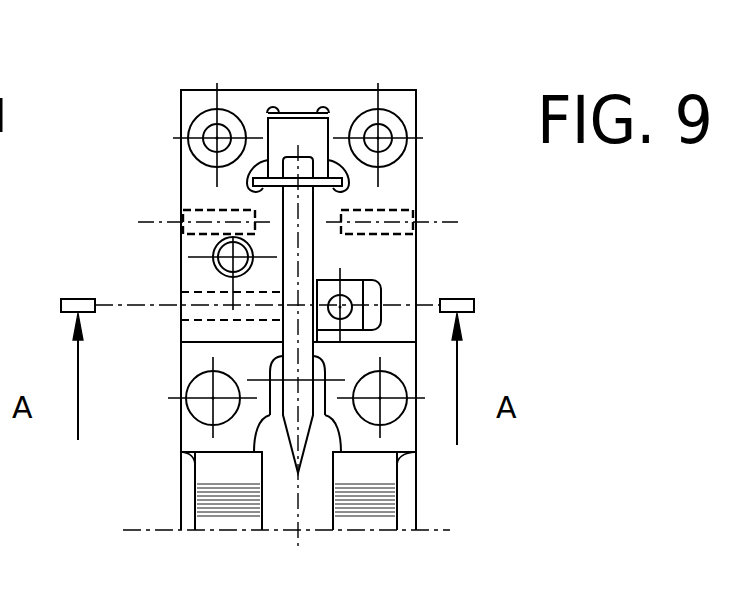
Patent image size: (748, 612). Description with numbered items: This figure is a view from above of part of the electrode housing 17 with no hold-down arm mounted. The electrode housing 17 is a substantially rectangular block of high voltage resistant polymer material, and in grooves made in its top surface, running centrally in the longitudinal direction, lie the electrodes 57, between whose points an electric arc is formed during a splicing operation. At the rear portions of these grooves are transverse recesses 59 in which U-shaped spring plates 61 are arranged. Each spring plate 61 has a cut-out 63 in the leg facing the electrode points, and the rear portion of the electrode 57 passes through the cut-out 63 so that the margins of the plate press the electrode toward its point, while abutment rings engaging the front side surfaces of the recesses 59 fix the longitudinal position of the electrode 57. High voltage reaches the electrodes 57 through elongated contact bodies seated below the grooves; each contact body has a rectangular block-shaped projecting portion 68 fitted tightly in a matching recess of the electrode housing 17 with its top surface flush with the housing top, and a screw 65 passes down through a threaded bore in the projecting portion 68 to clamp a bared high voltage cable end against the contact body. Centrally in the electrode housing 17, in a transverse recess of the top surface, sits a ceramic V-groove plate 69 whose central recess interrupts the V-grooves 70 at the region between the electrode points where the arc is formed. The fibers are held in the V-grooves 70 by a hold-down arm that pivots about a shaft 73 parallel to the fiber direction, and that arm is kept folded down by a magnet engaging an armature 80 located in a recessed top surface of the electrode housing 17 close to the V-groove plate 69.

The electrode housing 17 is at (257, 97).
The spring plate 61 is at (296, 114).
The transverse recess 59 is at (329, 123).
The shaft 73 is at (179, 211).
The cut-out 63 is at (342, 209).
The electrode 57 is at (310, 248).
The projecting portion 68 is at (355, 281).
The screw 65 is at (364, 330).
The armature 80 is at (201, 391).
The ceramic V-groove plate 69 is at (397, 468).
The V-groove 70 is at (397, 501).